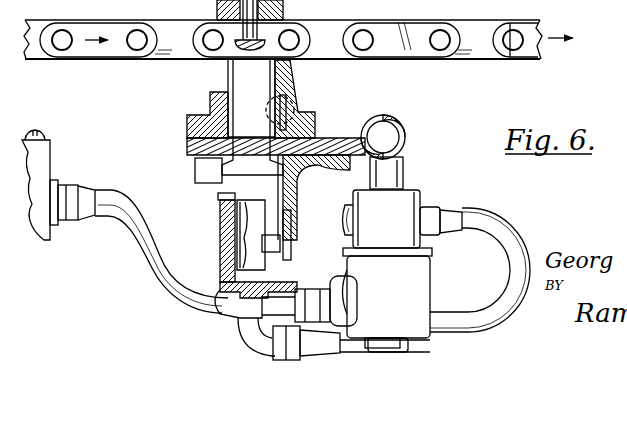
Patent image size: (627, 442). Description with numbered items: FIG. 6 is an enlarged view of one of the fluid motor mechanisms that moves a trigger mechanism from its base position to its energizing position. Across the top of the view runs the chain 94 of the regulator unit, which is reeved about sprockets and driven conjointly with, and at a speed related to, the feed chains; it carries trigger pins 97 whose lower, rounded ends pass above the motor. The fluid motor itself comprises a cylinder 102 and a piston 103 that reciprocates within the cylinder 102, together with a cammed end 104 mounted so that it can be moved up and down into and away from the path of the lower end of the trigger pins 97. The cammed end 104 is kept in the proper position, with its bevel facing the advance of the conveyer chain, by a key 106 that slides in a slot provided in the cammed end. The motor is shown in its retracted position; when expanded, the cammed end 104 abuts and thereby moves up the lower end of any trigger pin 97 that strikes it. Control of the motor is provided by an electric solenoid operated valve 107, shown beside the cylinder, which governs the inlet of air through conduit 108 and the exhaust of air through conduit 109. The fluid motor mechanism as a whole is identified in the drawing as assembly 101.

The chain 94 is at (100, 56).
The trigger pin 97 is at (240, 48).
The air supply hose and fitting 101 is at (172, 178).
The cylinder 102 is at (220, 214).
The piston 103 is at (242, 246).
The cammed end 104 is at (268, 60).
The key 106 is at (283, 103).
The electric solenoid operated valve 107 is at (400, 198).
The conduit 108 is at (403, 130).
The conduit 109 is at (351, 222).